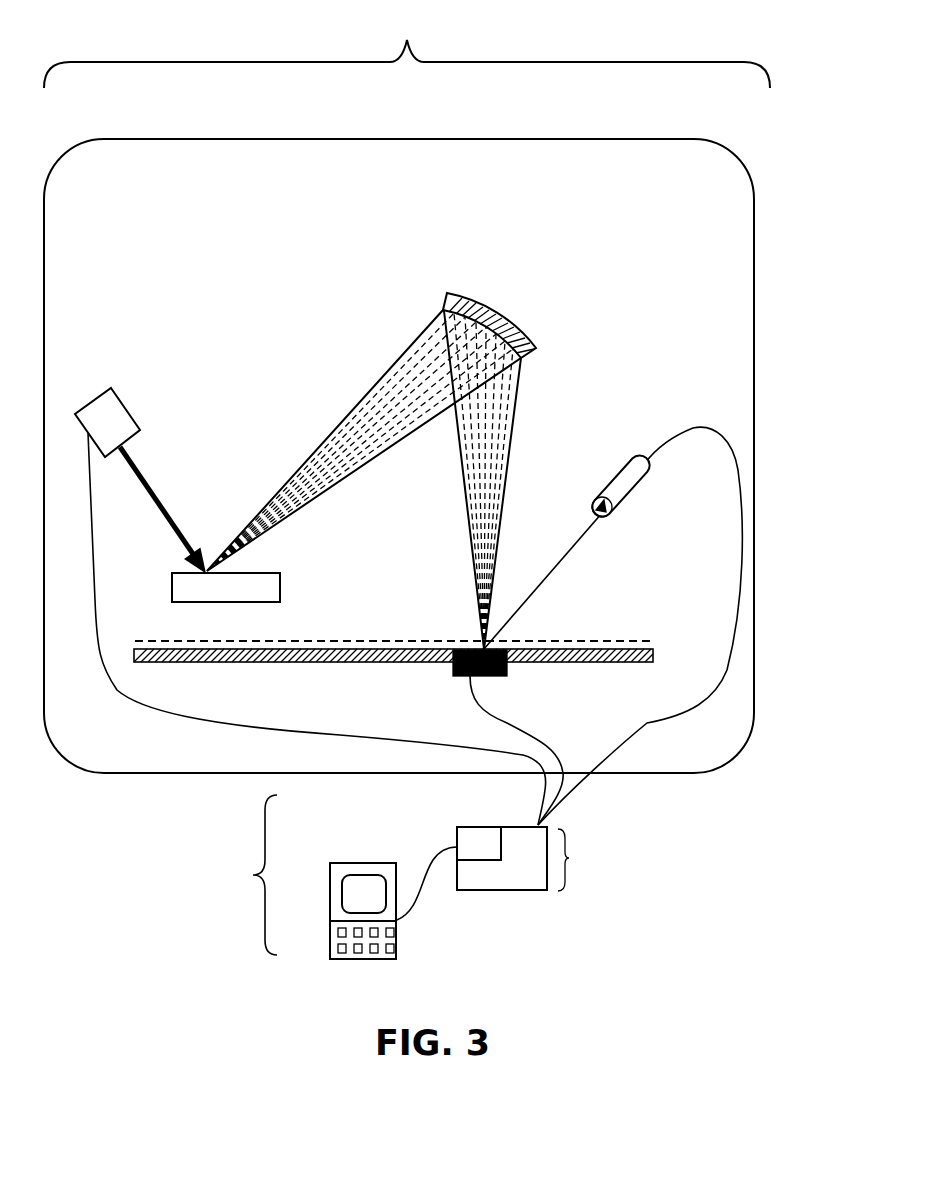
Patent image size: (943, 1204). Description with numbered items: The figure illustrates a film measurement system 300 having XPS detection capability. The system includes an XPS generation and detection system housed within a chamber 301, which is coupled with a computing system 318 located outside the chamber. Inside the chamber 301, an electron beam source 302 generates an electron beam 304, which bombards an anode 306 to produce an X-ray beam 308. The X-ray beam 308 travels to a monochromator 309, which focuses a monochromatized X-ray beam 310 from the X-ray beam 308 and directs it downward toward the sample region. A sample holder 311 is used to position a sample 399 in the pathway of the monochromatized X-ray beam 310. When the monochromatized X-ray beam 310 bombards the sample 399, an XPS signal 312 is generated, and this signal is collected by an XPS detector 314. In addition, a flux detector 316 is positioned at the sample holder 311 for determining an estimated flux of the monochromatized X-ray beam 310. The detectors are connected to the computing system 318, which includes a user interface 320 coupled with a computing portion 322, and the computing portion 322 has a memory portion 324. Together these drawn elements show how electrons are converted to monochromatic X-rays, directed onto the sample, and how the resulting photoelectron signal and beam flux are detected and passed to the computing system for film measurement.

The film measurement system 300 is at (407, 51).
The chamber 301 is at (755, 242).
The electron beam source 302 is at (115, 413).
The electron beam 304 is at (157, 493).
The anode 306 is at (233, 590).
The X-ray beam 308 is at (365, 393).
The monochromator 309 is at (500, 310).
The monochromatized X-ray beam 310 is at (518, 400).
The sample holder 311 is at (653, 657).
The XPS signal 312 is at (563, 563).
The XPS detector 314 is at (620, 492).
The flux detector 316 is at (497, 676).
The computing system 318 is at (413, 875).
The user interface 320 is at (338, 885).
The computing portion 322 is at (517, 841).
The memory portion 324 is at (478, 832).
The sample 399 is at (130, 641).